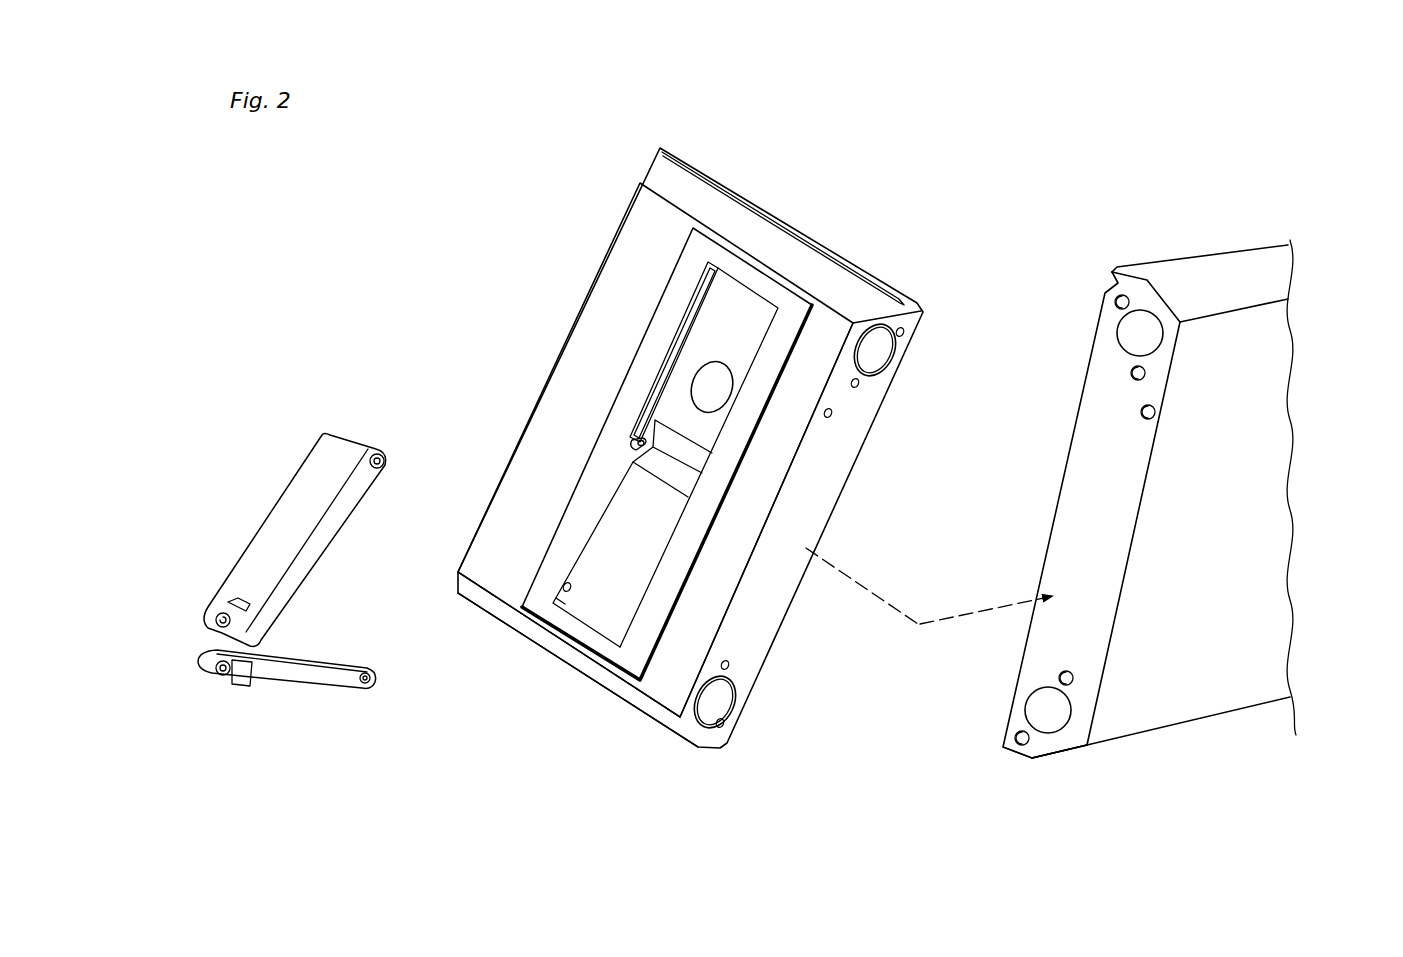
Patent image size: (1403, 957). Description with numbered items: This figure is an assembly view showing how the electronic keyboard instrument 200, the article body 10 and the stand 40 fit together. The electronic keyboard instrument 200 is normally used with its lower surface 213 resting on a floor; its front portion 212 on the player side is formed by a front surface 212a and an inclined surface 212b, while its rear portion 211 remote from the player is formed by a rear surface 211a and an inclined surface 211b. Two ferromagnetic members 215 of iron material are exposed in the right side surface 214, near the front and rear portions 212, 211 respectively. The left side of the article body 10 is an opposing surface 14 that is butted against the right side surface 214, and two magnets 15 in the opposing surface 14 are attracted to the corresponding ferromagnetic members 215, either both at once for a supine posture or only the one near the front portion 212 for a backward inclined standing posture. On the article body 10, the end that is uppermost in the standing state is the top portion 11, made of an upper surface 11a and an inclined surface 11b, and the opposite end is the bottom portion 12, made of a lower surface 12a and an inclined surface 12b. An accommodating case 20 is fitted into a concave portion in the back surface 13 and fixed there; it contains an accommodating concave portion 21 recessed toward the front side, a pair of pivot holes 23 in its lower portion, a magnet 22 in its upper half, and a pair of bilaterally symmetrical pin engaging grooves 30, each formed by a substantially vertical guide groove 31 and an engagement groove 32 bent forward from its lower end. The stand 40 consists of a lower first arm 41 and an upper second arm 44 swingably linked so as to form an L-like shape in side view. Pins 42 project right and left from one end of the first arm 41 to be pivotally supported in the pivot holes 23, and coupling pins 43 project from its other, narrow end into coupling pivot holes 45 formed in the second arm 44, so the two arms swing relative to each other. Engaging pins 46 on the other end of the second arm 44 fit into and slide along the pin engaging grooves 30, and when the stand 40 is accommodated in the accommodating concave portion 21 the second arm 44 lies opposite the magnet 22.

The article body 10 is at (629, 142).
The top portion 11 is at (687, 107).
The upper surface 11a is at (735, 188).
The inclined surface 11b is at (694, 188).
The bottom portion 12 is at (632, 833).
The lower surface 12a is at (703, 757).
The inclined surface 12b is at (657, 713).
The back surface 13 is at (633, 256).
The opposing surface 14 is at (823, 515).
The magnets 15 is at (887, 347).
The accommodating case 20 is at (785, 279).
The accommodating concave portion 21 is at (622, 512).
The magnet 22 is at (724, 378).
The pivot holes 23 is at (570, 597).
The pin engaging grooves 30 is at (492, 305).
The guide groove 31 is at (657, 397).
The engagement groove 32 is at (640, 442).
The stand 40 is at (308, 391).
The first arm 41 is at (310, 691).
The pins 42 is at (370, 690).
The coupling pins 43 is at (232, 680).
The second arm 44 is at (275, 499).
The coupling pivot holes 45 is at (210, 607).
The engaging pins 46 is at (378, 455).
The electronic keyboard instrument 200 is at (1323, 251).
The rear portion 211 is at (1262, 175).
The rear surface 211a is at (1155, 268).
The inclined surface 211b is at (1222, 282).
The front portion 212 is at (1115, 833).
The front surface 212a is at (1010, 756).
The inclined surface 212b is at (1068, 760).
The lower surface 213 is at (1182, 710).
The right side surface 214 is at (1045, 640).
The ferromagnetic members 215 is at (1128, 333).